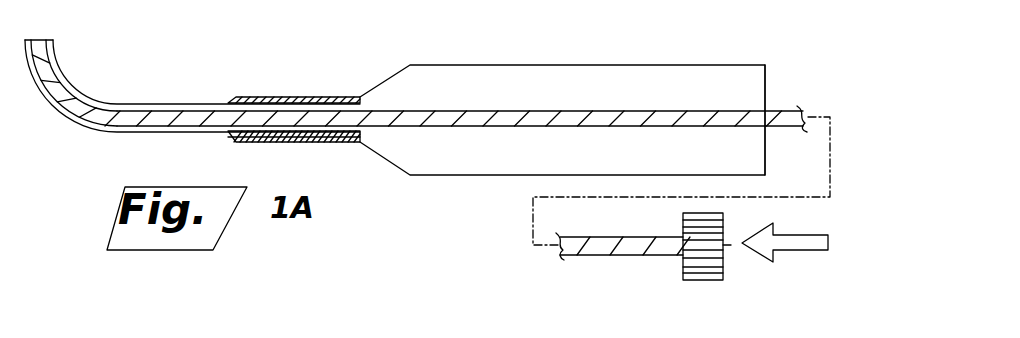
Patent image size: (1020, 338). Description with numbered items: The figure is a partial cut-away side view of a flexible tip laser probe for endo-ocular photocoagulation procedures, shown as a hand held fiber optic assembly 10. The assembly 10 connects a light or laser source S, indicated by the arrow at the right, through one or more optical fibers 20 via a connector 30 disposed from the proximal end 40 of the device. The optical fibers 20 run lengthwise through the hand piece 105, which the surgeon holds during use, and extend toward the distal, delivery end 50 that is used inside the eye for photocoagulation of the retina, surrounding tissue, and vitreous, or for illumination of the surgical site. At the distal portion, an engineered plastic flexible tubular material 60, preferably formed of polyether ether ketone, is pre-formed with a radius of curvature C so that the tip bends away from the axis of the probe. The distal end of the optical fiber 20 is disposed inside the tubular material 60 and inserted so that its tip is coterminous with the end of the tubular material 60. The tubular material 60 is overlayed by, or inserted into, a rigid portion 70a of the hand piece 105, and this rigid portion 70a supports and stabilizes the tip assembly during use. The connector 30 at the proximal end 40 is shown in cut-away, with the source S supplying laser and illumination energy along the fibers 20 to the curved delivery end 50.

The hand held fiber optic assembly 10 is at (366, 34).
The optical fiber 20 is at (470, 120).
The connector 30 is at (691, 281).
The proximal end 40 is at (766, 80).
The distal delivery end 50 is at (42, 32).
The flexible tubular material 60 is at (160, 131).
The rigid portion 70a is at (307, 97).
The hand piece 105 is at (593, 85).
The radius of curvature C is at (57, 117).
The laser source S is at (795, 251).